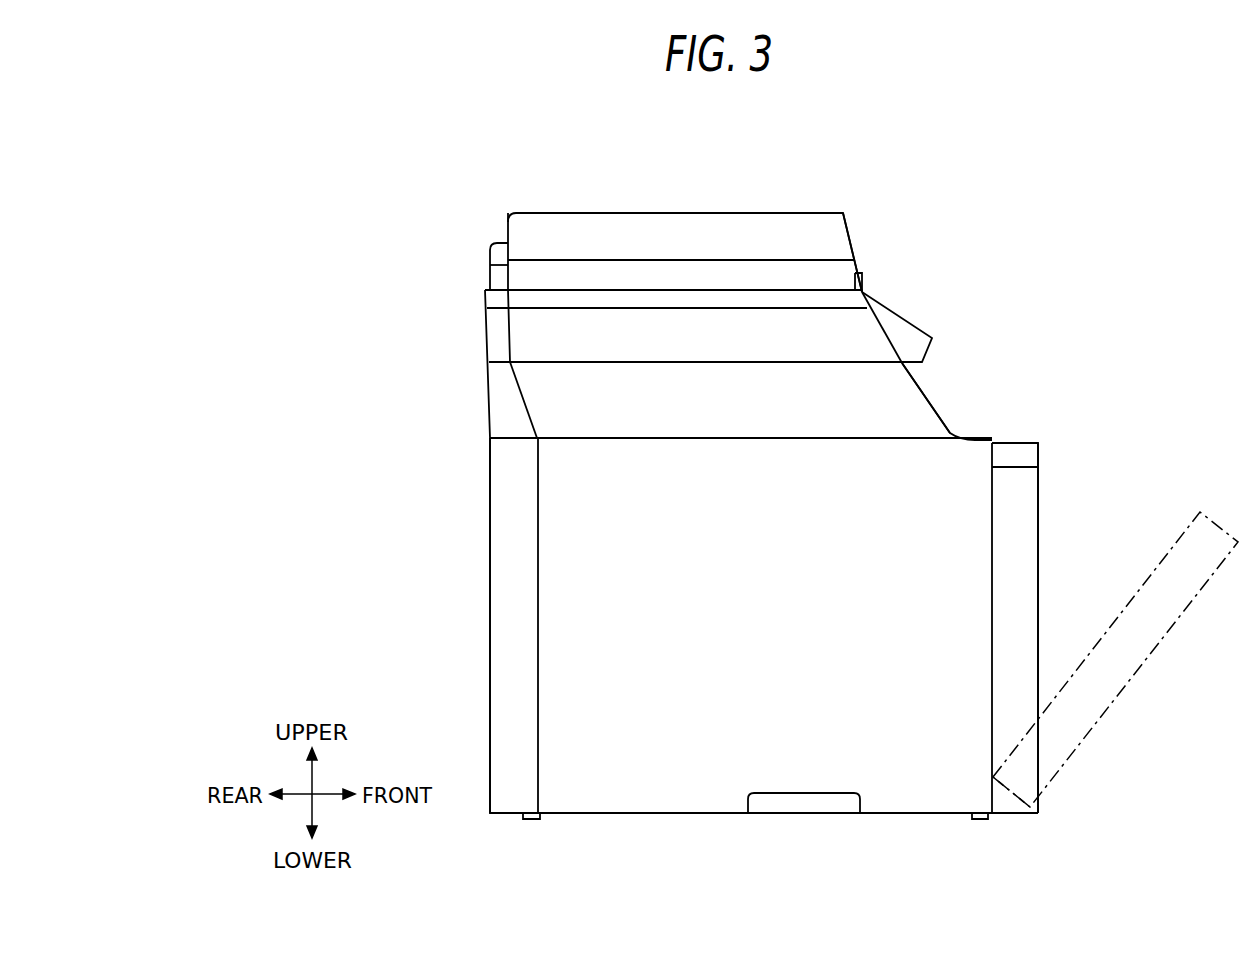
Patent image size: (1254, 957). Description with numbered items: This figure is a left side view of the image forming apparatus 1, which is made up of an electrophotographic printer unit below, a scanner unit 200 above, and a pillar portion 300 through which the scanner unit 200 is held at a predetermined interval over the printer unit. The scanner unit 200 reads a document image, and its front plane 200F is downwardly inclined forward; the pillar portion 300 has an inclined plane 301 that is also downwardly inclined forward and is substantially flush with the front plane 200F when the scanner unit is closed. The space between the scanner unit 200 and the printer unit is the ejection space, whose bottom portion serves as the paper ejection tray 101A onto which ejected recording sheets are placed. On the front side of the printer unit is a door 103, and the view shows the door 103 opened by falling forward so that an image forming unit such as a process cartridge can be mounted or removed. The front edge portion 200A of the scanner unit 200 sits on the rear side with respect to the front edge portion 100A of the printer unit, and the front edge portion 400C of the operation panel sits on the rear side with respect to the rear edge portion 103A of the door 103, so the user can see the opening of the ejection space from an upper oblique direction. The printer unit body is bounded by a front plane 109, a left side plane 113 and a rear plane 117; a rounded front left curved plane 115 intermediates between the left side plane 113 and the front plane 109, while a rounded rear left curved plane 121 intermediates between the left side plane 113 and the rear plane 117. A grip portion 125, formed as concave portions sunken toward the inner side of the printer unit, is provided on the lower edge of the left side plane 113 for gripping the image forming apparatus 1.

The image forming apparatus 1 is at (594, 194).
The scanner unit 200 is at (680, 198).
The front plane 200F is at (883, 322).
The front edge portion 200A is at (895, 326).
The front edge portion 400C is at (932, 338).
The inclined plane 301 is at (922, 392).
The pillar portion 300 is at (567, 403).
The door 103 is at (1012, 488).
The rear edge portion 103A is at (1000, 440).
The paper ejection tray 101A is at (1040, 443).
The front edge portion 100A is at (1040, 446).
The front plane 109 is at (1040, 500).
The rear plane 117 is at (490, 623).
The rear left curved plane 121 is at (507, 675).
The left side plane 113 is at (733, 747).
The grip portion 125 is at (802, 803).
The front left curved plane 115 is at (1037, 765).